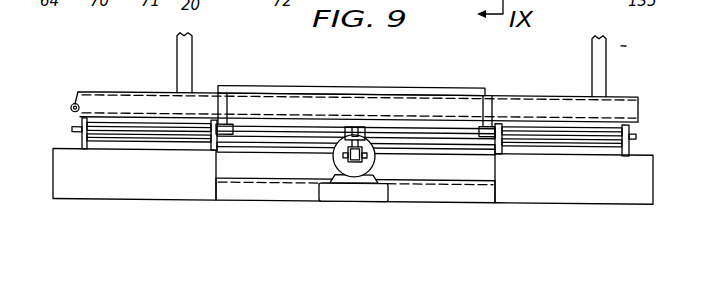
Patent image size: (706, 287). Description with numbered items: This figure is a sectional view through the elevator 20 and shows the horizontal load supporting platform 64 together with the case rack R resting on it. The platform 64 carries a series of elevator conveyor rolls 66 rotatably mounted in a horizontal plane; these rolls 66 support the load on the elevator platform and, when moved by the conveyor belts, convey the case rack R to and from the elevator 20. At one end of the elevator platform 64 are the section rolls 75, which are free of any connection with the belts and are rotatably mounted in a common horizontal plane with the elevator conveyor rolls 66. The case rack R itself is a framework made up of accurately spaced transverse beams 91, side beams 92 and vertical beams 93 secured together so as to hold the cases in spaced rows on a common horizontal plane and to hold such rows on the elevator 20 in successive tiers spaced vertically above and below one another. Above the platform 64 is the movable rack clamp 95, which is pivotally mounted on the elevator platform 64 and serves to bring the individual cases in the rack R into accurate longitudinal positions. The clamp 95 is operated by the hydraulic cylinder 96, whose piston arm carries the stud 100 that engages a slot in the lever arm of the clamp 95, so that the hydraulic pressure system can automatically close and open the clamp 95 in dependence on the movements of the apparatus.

The elevator 20 is at (668, 200).
The horizontal load supporting platform 64 is at (58, 173).
The elevator conveyor rolls 66 is at (459, 142).
The section rolls 75 is at (135, 143).
The transverse beams 91 is at (132, 91).
The side beams 92 is at (72, 103).
The vertical beams 93 is at (177, 48).
The movable rack clamp 95 is at (353, 86).
The hydraulic cylinder 96 is at (338, 160).
The stud 100 is at (364, 160).
The case rack R is at (638, 126).